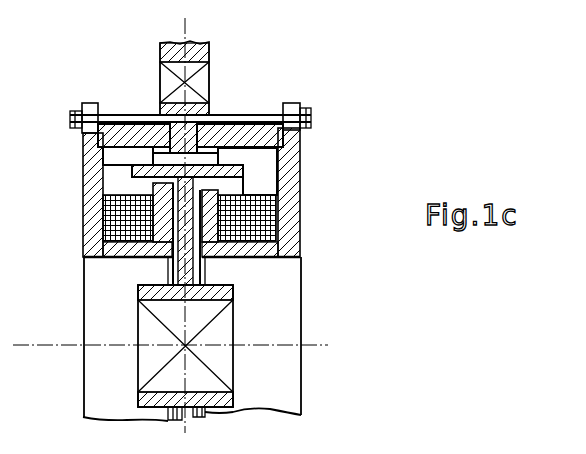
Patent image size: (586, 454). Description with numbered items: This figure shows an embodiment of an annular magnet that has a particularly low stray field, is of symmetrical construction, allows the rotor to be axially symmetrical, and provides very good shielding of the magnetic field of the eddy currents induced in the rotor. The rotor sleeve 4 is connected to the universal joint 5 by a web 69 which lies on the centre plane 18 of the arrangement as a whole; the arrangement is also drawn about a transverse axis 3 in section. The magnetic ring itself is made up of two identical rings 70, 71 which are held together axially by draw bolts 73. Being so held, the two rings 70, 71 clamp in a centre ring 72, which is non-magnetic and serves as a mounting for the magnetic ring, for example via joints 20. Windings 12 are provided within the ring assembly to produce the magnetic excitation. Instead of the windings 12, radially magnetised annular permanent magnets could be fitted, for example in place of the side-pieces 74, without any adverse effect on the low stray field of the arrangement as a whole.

The centre plane 18 is at (188, 28).
The joints 20 is at (167, 80).
The ring 71 is at (143, 137).
The centre ring 72 is at (203, 133).
The draw bolts 73 is at (279, 112).
The ring 70 is at (90, 212).
The rotor sleeve 4 is at (245, 170).
The side-pieces 74 is at (207, 191).
The windings 12 is at (267, 223).
The web 69 is at (193, 273).
The universal joint 5 is at (228, 326).
The axis 3 is at (53, 344).